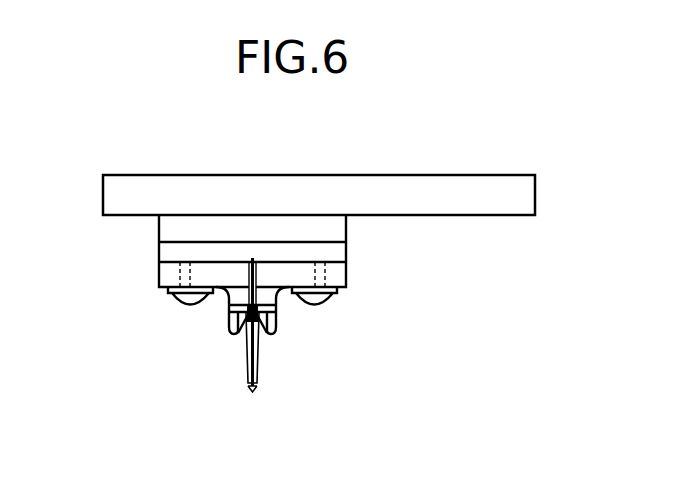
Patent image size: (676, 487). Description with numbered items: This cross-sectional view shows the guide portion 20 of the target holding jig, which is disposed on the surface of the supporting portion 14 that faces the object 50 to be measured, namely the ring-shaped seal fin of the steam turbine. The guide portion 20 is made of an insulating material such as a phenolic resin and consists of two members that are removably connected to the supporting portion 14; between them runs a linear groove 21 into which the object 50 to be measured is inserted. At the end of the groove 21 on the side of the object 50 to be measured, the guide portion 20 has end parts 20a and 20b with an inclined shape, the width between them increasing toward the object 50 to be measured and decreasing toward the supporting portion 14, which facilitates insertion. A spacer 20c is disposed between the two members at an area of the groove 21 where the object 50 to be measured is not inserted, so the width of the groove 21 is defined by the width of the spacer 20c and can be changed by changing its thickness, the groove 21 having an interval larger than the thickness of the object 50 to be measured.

The supporting portion 14 is at (480, 188).
The guide portion 20 is at (133, 281).
The end part 20a is at (229, 325).
The end part 20b is at (276, 325).
The spacer 20c is at (252, 262).
The groove 21 is at (250, 278).
The object to be measured 50 is at (255, 395).